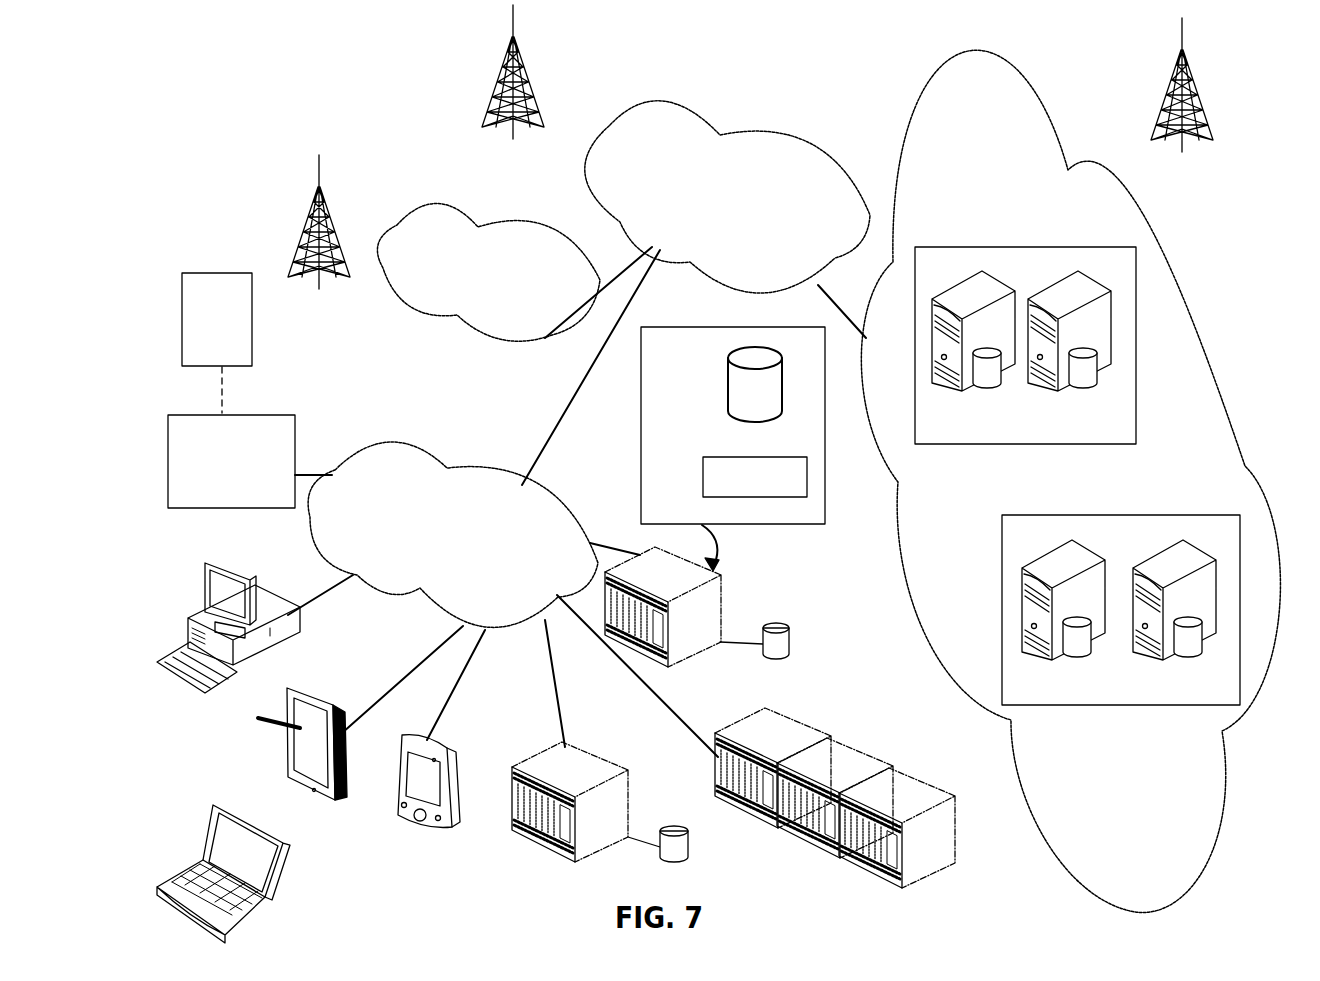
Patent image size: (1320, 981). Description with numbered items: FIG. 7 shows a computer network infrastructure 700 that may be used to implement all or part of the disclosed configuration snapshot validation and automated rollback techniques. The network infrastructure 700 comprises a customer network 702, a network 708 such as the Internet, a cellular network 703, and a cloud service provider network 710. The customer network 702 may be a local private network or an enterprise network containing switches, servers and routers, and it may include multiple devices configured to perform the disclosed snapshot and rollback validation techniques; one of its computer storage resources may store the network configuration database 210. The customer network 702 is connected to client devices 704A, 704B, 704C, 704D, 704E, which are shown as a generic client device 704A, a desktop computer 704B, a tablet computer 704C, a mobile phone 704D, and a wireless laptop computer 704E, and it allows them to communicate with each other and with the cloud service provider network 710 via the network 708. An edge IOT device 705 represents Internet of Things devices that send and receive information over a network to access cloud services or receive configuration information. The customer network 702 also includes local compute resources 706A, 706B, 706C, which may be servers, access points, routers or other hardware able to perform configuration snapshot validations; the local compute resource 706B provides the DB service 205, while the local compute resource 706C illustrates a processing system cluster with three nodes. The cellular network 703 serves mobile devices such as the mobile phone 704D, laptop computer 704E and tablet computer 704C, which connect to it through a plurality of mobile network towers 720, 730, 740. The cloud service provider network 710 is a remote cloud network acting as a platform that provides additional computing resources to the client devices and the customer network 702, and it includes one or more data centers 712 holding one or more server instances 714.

The network infrastructure 700 is at (396, 133).
The customer network 702 is at (422, 443).
The cellular network 703 is at (507, 227).
The client device 704A is at (257, 415).
The desktop computer 704B is at (232, 570).
The tablet computer 704C is at (313, 688).
The mobile phone 704D is at (447, 752).
The laptop computer 704E is at (282, 853).
The edge IOT device 705 is at (195, 273).
The local compute resource 706A is at (575, 767).
The local compute resource 706B is at (718, 622).
The local compute resource 706C is at (790, 712).
The network 708 is at (687, 110).
The cloud service provider network 710 is at (1180, 247).
The data center 712 is at (955, 247).
The server instance 714 is at (981, 386).
The mobile network tower 720 is at (513, 90).
The mobile network tower 730 is at (319, 238).
The mobile network tower 740 is at (1182, 102).
The network configuration database 210 is at (728, 388).
The DB service 205 is at (703, 477).